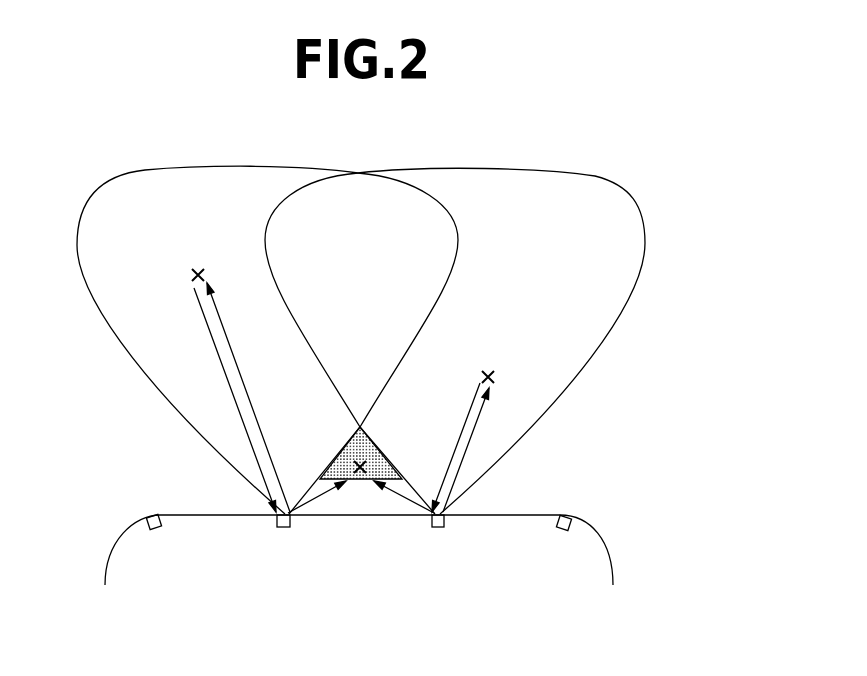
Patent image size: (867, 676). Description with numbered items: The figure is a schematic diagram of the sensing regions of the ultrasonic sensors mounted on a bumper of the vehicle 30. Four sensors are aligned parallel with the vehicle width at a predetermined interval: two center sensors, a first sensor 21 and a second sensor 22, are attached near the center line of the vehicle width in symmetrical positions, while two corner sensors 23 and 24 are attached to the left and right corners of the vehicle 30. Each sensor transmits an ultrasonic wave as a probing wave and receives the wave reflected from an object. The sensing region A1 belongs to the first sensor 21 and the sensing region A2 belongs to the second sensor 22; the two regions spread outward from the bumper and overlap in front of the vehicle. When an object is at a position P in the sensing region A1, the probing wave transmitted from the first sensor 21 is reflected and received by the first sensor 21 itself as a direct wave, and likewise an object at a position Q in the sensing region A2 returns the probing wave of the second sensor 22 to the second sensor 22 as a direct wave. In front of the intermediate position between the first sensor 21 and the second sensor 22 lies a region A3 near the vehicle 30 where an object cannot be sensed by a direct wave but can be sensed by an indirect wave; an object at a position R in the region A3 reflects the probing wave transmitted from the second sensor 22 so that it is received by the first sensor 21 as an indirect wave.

The first sensor 21 is at (437, 528).
The second sensor 22 is at (283, 528).
The corner sensor 23 is at (562, 530).
The corner sensor 24 is at (157, 530).
The vehicle 30 is at (607, 550).
The sensing region of the first sensor A1 is at (470, 171).
The sensing region of the second sensor A2 is at (229, 170).
The region sensed by indirect wave A3 is at (362, 428).
The position in sensing region A1 P is at (464, 426).
The position in sensing region A2 Q is at (238, 375).
The position in region A3 R is at (361, 487).